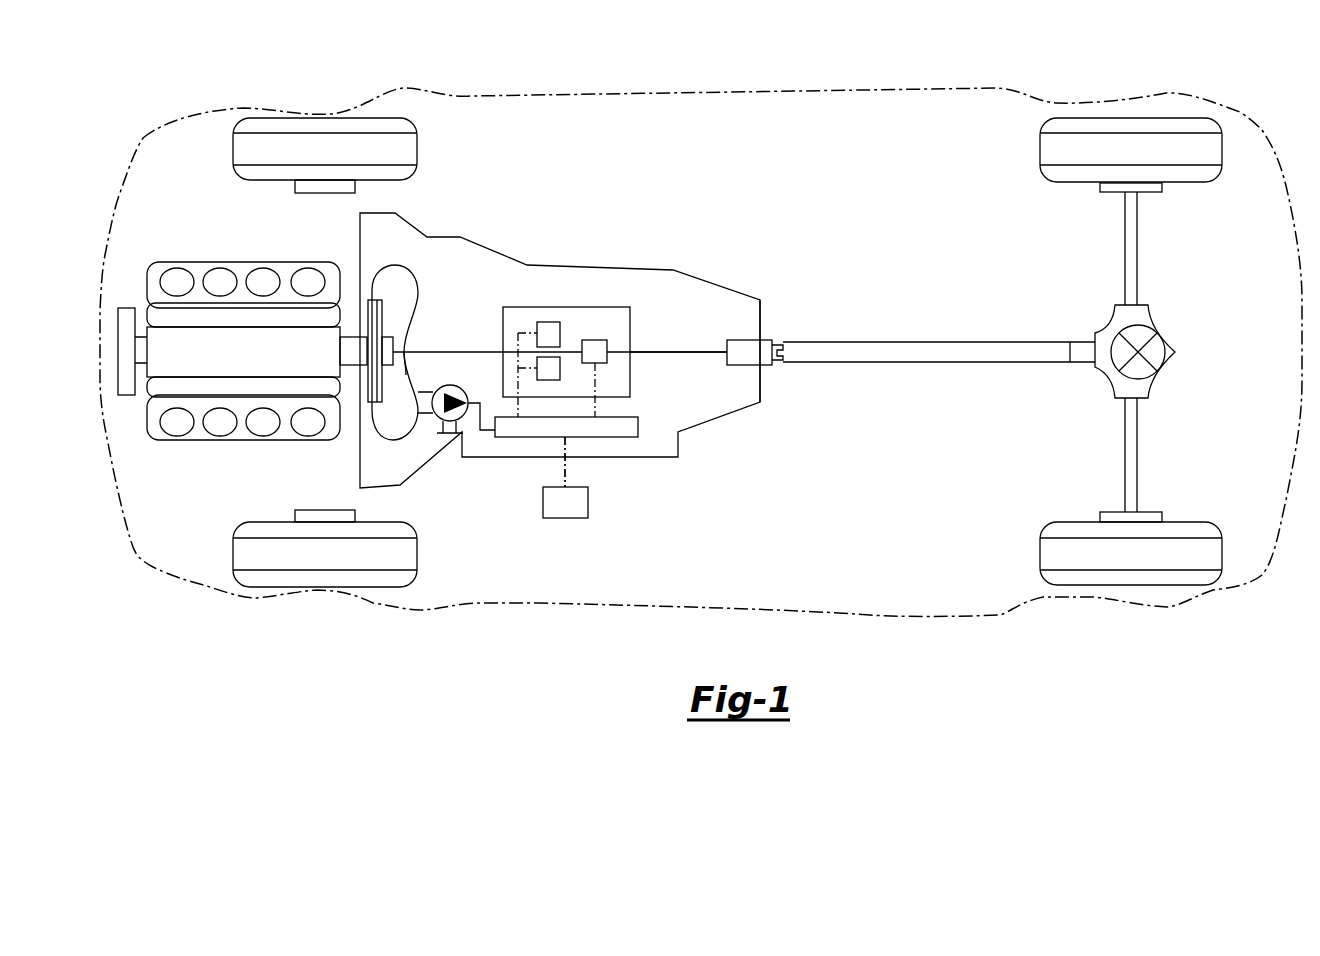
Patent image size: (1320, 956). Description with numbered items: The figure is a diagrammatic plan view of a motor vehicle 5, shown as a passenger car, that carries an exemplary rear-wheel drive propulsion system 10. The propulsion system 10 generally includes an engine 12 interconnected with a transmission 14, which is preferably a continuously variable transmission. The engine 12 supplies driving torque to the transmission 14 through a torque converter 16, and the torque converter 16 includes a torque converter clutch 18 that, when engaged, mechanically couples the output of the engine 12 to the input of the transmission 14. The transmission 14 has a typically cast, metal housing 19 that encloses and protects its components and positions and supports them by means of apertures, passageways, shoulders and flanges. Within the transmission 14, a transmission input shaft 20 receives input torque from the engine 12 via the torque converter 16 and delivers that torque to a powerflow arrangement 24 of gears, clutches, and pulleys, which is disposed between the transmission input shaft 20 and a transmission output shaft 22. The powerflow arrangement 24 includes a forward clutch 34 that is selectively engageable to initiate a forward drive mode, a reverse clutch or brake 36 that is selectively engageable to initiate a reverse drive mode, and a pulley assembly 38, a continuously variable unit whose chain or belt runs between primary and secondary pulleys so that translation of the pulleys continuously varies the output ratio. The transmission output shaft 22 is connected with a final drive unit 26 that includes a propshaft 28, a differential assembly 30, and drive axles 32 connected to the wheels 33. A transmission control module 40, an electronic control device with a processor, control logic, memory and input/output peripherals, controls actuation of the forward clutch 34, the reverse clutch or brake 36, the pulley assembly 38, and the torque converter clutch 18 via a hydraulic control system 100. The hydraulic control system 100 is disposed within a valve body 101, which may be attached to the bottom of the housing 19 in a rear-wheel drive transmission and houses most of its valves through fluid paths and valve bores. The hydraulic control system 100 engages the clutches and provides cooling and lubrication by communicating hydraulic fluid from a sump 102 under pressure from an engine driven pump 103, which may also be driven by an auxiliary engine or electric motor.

The motor vehicle 5 is at (803, 90).
The propulsion system 10 is at (755, 186).
The engine 12 is at (251, 368).
The transmission 14 is at (652, 236).
The torque converter 16 is at (410, 266).
The torque converter clutch 18 is at (397, 372).
The housing 19 is at (730, 288).
The transmission input shaft 20 is at (415, 350).
The transmission output shaft 22 is at (688, 354).
The powerflow arrangement 24 is at (600, 306).
The final drive unit 26 is at (1024, 296).
The propshaft 28 is at (895, 340).
The differential assembly 30 is at (1168, 320).
The drive axles 32 is at (1132, 259).
The wheels 33 is at (1183, 183).
The forward clutch 34 is at (547, 320).
The reverse clutch or brake 36 is at (561, 367).
The pulley assembly 38 is at (597, 339).
The transmission control module 40 is at (590, 513).
The hydraulic control system 100 is at (527, 432).
The valve body 101 is at (617, 439).
The sump 102 is at (448, 435).
The pump 103 is at (451, 384).